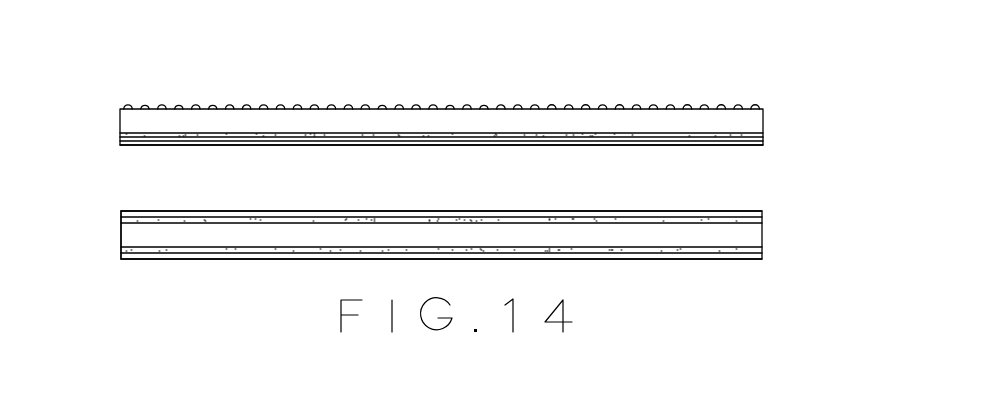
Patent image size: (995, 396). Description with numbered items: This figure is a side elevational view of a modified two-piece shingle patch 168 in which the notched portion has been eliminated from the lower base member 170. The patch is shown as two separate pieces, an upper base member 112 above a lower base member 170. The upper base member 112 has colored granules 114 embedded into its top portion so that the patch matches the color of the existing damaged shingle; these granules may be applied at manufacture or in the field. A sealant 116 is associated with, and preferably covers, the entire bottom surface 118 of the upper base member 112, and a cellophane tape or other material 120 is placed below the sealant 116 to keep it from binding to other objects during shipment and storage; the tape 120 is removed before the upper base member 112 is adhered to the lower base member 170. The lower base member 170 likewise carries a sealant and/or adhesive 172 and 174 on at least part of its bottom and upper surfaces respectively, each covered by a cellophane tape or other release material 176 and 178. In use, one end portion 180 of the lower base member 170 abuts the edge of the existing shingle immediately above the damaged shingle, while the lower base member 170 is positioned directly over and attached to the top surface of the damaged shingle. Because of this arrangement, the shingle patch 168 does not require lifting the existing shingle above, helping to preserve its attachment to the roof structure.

The modified version of two-piece shingle patch 168 is at (85, 141).
The upper base member 112 is at (612, 117).
The colored granules 114 is at (515, 107).
The sealant 116 is at (712, 133).
The bottom surface 118 is at (737, 141).
The cellophane tape 120 is at (210, 145).
The lower base member 170 is at (771, 233).
The sealant 172 is at (767, 250).
The sealant 174 is at (680, 222).
The cellophane tape 176 is at (262, 254).
The cellophane tape 178 is at (604, 211).
The end portion 180 is at (120, 237).